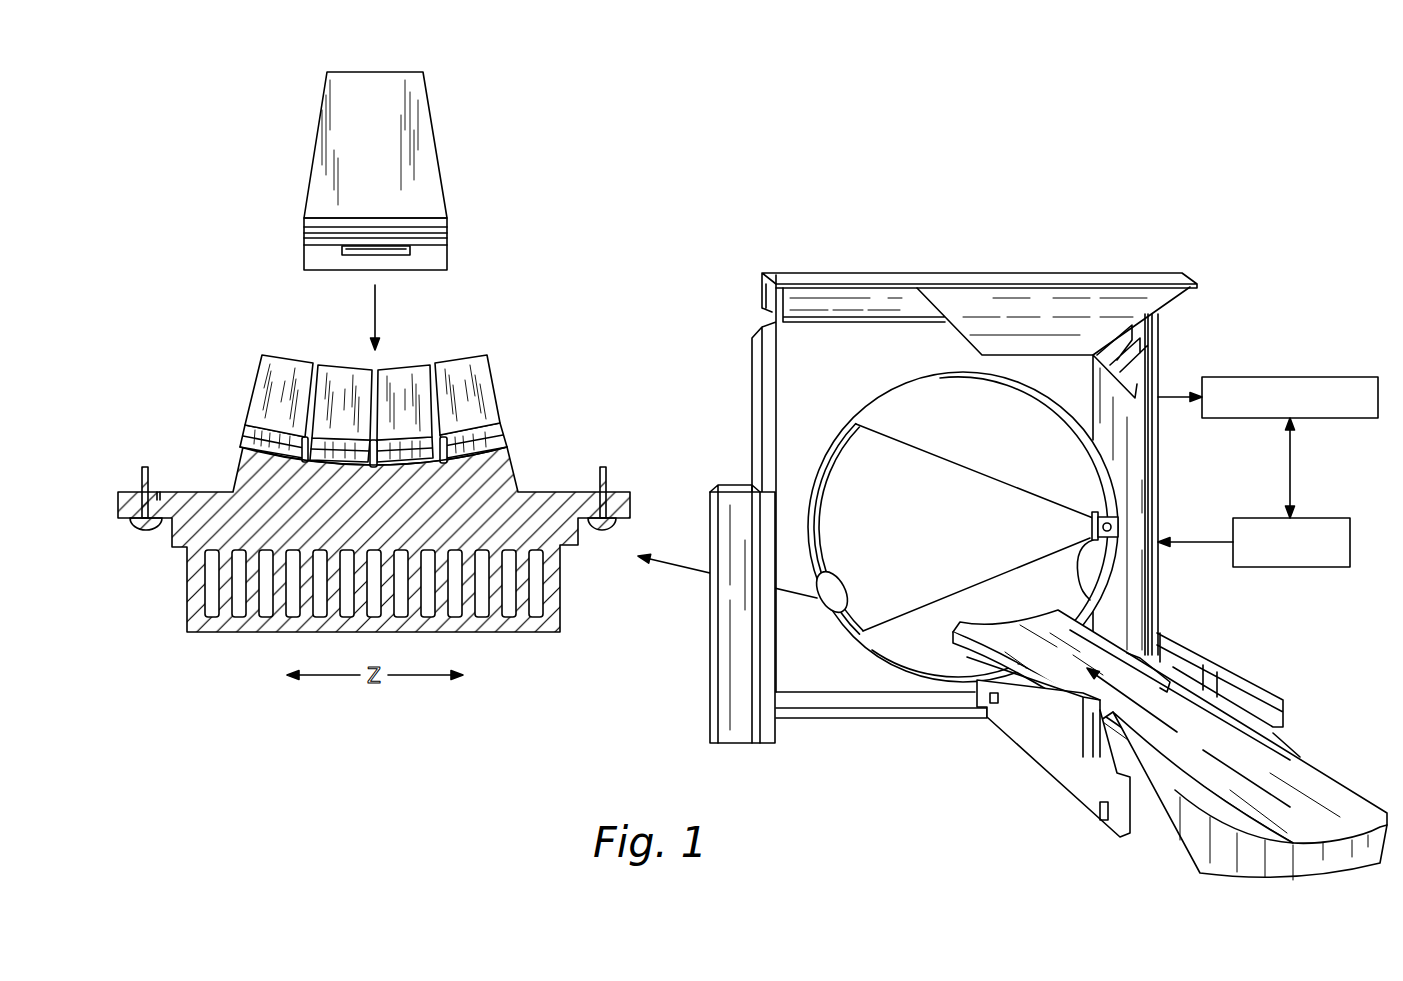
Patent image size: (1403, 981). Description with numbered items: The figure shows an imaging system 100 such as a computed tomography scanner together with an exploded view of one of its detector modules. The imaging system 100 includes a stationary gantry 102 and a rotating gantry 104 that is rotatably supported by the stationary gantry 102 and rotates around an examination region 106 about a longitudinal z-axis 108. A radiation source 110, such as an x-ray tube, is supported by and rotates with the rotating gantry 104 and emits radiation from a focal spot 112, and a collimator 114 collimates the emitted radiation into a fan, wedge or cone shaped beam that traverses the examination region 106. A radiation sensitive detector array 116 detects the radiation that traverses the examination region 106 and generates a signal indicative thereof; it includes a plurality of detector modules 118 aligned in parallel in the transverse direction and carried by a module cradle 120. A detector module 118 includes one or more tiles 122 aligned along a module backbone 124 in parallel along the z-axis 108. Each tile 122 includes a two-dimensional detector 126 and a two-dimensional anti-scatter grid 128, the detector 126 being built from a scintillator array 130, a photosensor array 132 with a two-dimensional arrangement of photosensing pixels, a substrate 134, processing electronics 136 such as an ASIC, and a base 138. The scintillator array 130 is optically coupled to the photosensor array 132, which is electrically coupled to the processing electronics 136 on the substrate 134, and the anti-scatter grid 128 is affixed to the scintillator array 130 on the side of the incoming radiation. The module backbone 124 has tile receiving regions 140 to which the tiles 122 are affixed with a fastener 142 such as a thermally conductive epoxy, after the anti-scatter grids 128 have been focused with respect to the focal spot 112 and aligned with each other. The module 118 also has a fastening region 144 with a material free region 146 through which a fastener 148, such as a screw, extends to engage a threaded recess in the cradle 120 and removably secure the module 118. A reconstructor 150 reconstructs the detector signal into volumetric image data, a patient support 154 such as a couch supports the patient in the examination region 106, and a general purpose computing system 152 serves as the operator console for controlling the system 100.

The imaging system 100 is at (912, 538).
The stationary gantry 102 is at (752, 390).
The rotating gantry 104 is at (912, 385).
The examination region 106 is at (998, 542).
The z-axis 108 is at (912, 745).
The radiation source 110 is at (1127, 500).
The focal spot 112 is at (1092, 512).
The collimator 114 is at (1078, 572).
The radiation sensitive detector array 116 is at (838, 467).
The detector module 118 is at (600, 331).
The module cradle 120 is at (817, 507).
The tile 122 is at (375, 266).
The module backbone 124 is at (555, 490).
The two-dimensional detector 126 is at (409, 324).
The anti-scatter grid 128 is at (493, 373).
The scintillator array 130 is at (447, 222).
The photosensor array 132 is at (447, 232).
The substrate 134 is at (447, 242).
The processing electronics 136 is at (362, 248).
The base 138 is at (447, 262).
The tile receiving region 140 is at (282, 435).
The fastener 142 is at (513, 464).
The fastening region 144 is at (140, 425).
The material free region 146 is at (157, 478).
The fastener 148 is at (143, 523).
The reconstructor 150 is at (1320, 377).
The general purpose computing system 152 is at (1297, 567).
The patient support 154 is at (1313, 790).